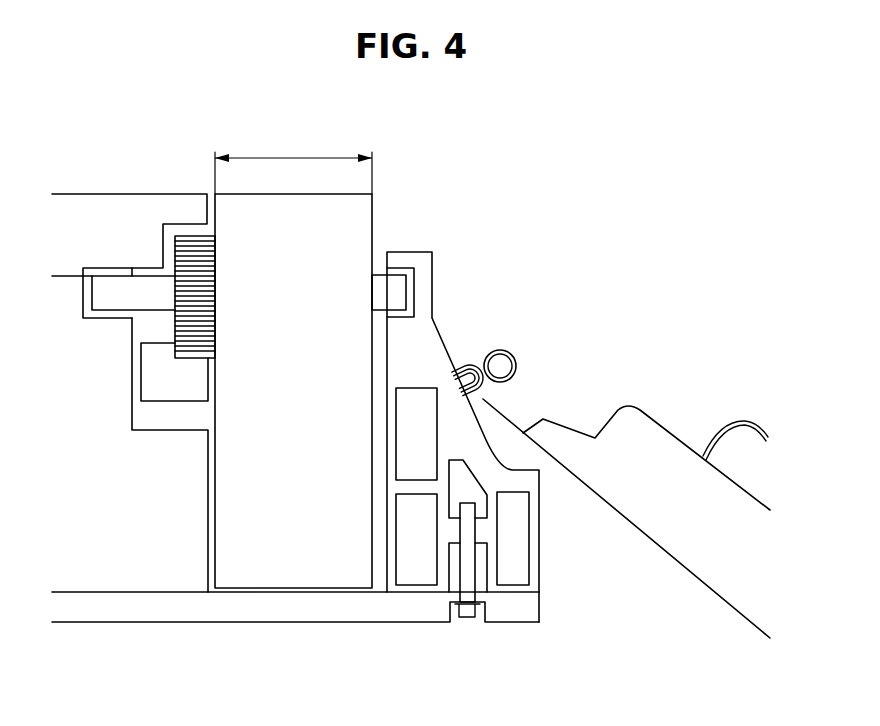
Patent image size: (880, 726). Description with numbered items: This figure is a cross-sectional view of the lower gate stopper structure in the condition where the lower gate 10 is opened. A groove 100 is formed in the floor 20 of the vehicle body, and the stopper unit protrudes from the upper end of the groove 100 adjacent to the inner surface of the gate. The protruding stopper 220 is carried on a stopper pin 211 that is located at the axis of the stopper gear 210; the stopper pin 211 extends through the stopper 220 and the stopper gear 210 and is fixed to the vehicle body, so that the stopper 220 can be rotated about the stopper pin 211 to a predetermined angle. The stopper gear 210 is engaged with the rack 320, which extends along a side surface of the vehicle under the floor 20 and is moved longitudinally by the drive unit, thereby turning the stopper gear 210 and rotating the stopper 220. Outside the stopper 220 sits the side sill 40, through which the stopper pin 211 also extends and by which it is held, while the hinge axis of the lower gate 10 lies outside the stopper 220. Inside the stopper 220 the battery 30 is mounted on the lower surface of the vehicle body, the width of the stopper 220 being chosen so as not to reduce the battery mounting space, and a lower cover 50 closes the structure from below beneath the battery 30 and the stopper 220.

The lower gate 10 is at (653, 425).
The floor 20 is at (80, 223).
The battery 30 is at (93, 530).
The side sill 40 is at (480, 508).
The lower cover 50 is at (237, 610).
The groove 100 is at (293, 161).
The stopper gear 210 is at (197, 242).
The stopper pin 211 is at (150, 287).
The stopper 220 is at (359, 233).
The rack 320 is at (168, 390).